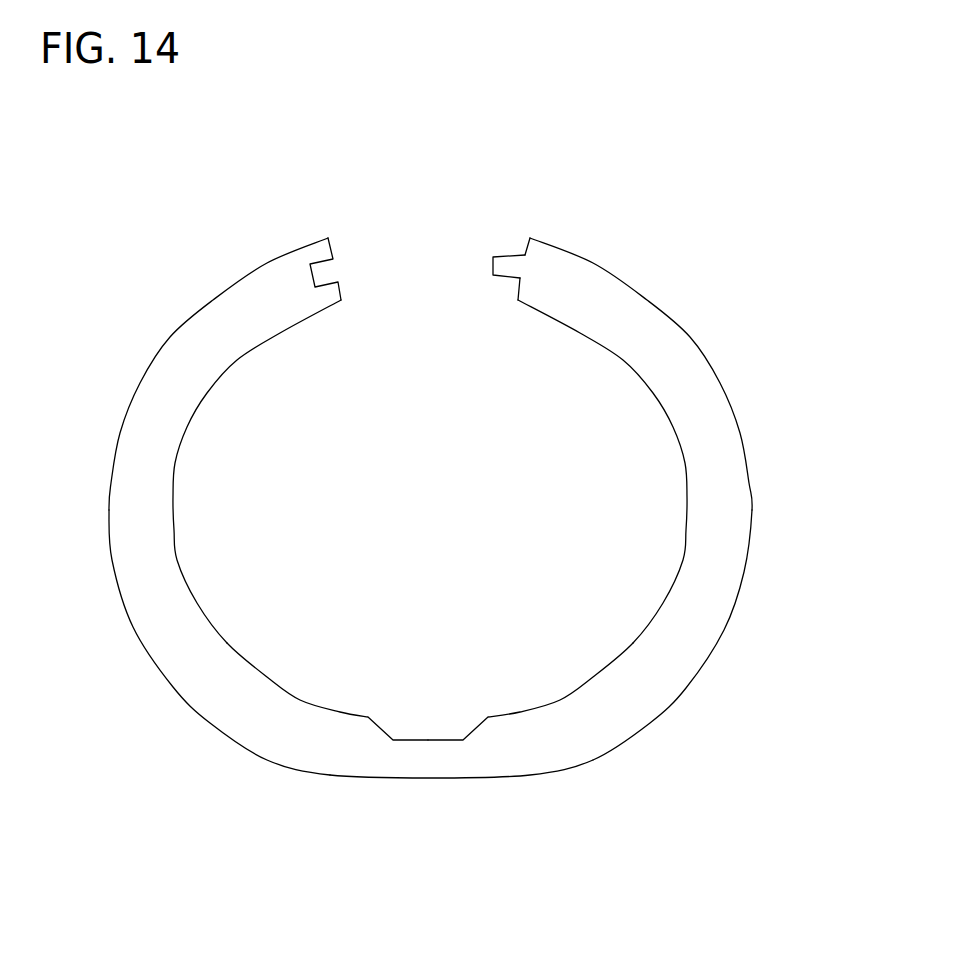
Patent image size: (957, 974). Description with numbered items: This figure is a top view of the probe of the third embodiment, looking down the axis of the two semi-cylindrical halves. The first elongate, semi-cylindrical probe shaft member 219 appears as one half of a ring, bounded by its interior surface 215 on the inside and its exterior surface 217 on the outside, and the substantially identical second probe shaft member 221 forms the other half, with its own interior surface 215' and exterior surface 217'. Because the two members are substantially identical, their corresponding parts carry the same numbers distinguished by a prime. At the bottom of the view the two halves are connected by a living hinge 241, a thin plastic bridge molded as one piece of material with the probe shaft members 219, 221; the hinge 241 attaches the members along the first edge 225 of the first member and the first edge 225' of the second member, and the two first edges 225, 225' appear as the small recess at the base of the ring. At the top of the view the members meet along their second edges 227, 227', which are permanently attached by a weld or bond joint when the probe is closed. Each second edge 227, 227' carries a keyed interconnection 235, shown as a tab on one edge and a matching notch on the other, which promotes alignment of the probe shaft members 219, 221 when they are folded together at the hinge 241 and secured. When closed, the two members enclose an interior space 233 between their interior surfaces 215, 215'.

The interior surface 215 is at (602, 471).
The interior surface 215' is at (257, 471).
The exterior surface 217 is at (709, 635).
The exterior surface 217' is at (191, 642).
The first probe shaft member 219 is at (737, 491).
The second probe shaft member 221 is at (138, 490).
The first edge 225 is at (530, 686).
The first edge 225' is at (327, 679).
The second edge 227 is at (476, 296).
The second edge 227' is at (329, 222).
The interior space 233 is at (348, 460).
The keyed interconnection 235 is at (508, 257).
The living hinge 241 is at (433, 765).